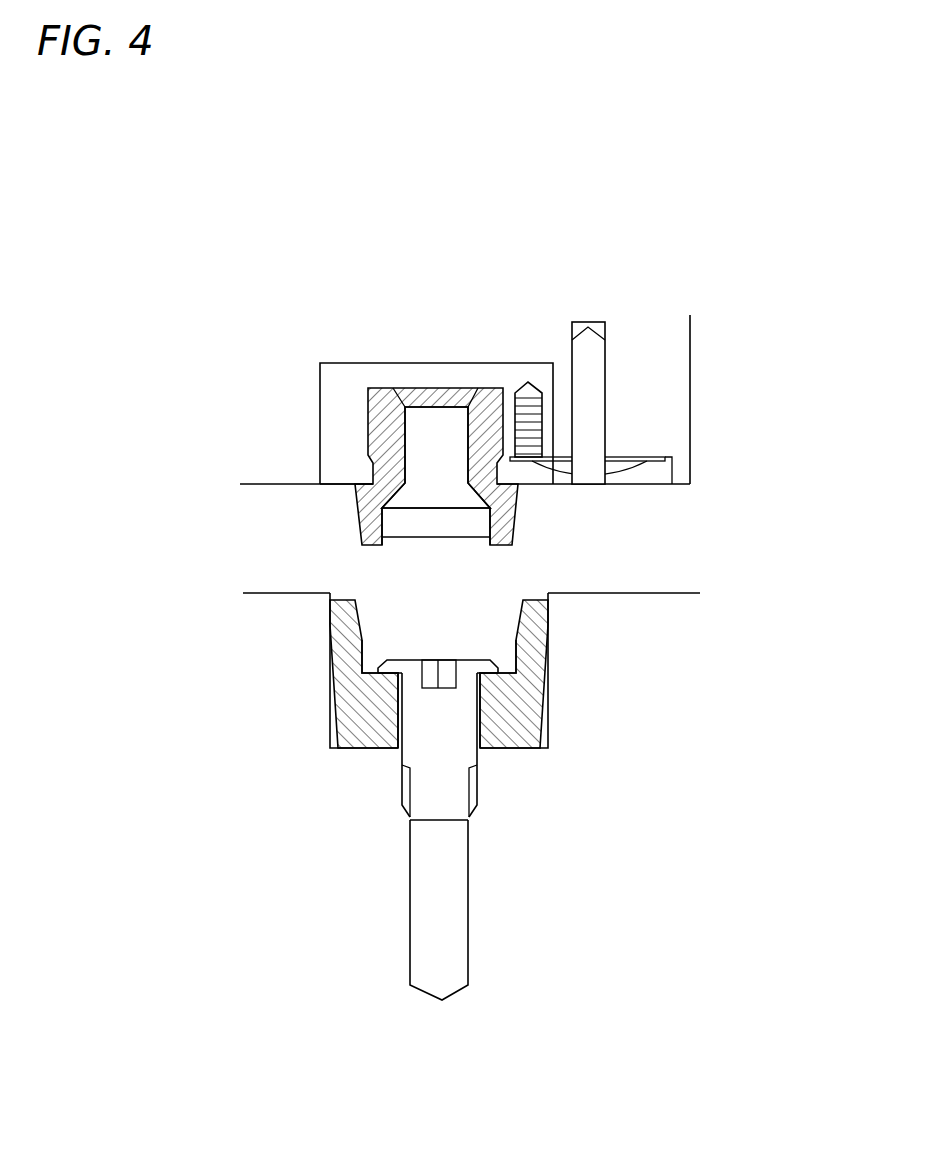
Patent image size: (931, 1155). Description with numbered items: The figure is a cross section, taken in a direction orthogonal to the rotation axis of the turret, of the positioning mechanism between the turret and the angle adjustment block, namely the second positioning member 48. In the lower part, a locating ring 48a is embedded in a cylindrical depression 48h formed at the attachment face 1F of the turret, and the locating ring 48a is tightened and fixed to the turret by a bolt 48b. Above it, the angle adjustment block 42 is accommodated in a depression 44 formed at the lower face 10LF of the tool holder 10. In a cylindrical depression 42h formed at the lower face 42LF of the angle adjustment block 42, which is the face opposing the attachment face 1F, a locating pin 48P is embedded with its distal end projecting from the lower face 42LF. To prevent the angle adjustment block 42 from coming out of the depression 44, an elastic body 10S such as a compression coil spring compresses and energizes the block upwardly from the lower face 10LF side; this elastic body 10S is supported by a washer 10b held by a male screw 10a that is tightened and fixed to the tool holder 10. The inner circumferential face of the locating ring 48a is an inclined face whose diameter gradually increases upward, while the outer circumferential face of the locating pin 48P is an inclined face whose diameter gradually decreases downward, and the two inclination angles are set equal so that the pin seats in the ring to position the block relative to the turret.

The tool holder 10 is at (502, 428).
The lower face of the tool holder 10LF is at (273, 483).
The elastic body 10S is at (528, 395).
The washer 10b is at (632, 457).
The male screw 10a is at (619, 467).
The second positioning member 48 is at (405, 377).
The angle adjustment block 42 is at (358, 370).
The depression 44 is at (321, 377).
The cylindrical depression 42h is at (372, 430).
The lower face of the angle adjustment block 42LF is at (337, 487).
The locating pin 48P is at (513, 531).
The attachment face of the turret 1F is at (652, 593).
The locating ring 48a is at (547, 648).
The cylindrical depression 48h is at (545, 733).
The bolt 48b is at (462, 883).